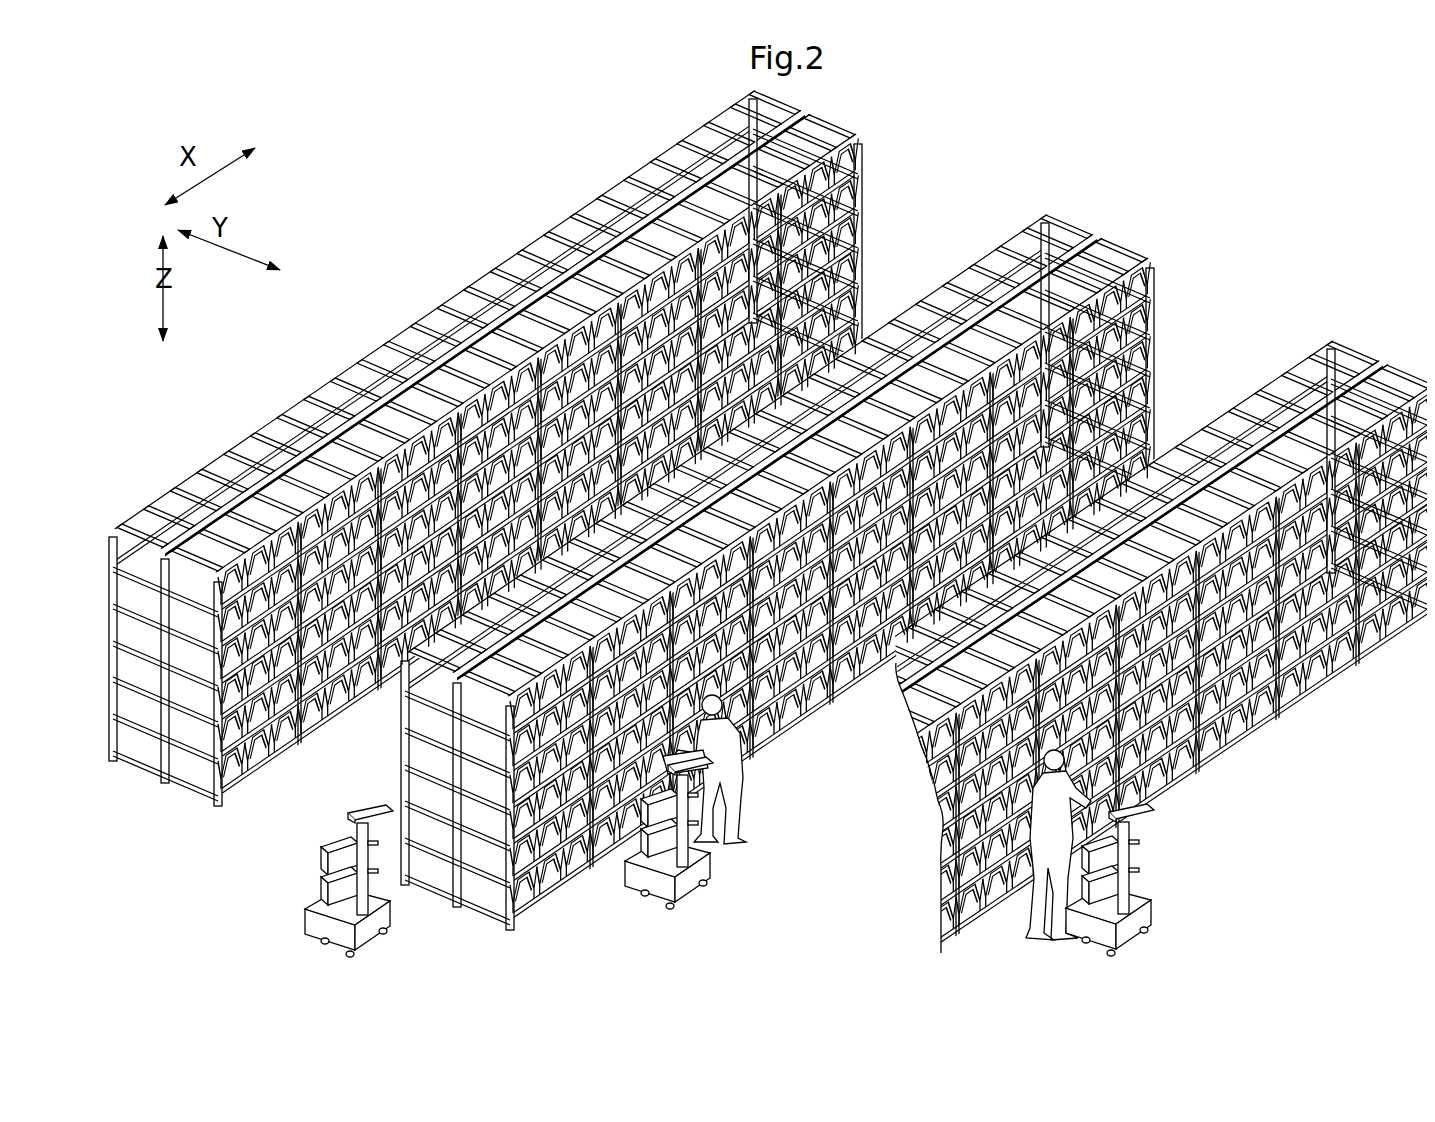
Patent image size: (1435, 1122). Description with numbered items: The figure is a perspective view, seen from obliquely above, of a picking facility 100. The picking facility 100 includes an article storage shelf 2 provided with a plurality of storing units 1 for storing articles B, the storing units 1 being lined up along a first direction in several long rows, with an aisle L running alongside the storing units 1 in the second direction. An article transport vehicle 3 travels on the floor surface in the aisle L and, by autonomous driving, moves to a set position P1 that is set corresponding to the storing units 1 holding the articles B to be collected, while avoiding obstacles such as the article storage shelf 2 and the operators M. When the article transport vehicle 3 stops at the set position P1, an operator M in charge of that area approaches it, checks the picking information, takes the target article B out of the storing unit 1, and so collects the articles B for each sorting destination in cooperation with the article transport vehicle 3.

The picking facility 100 is at (768, 570).
The storing unit 1 is at (342, 380).
The article storage shelf 2 is at (432, 292).
The article transport vehicle 3 is at (300, 915).
The article B is at (1218, 732).
The operator M is at (735, 800).
The aisle L is at (256, 826).
The set position P1 is at (658, 900).